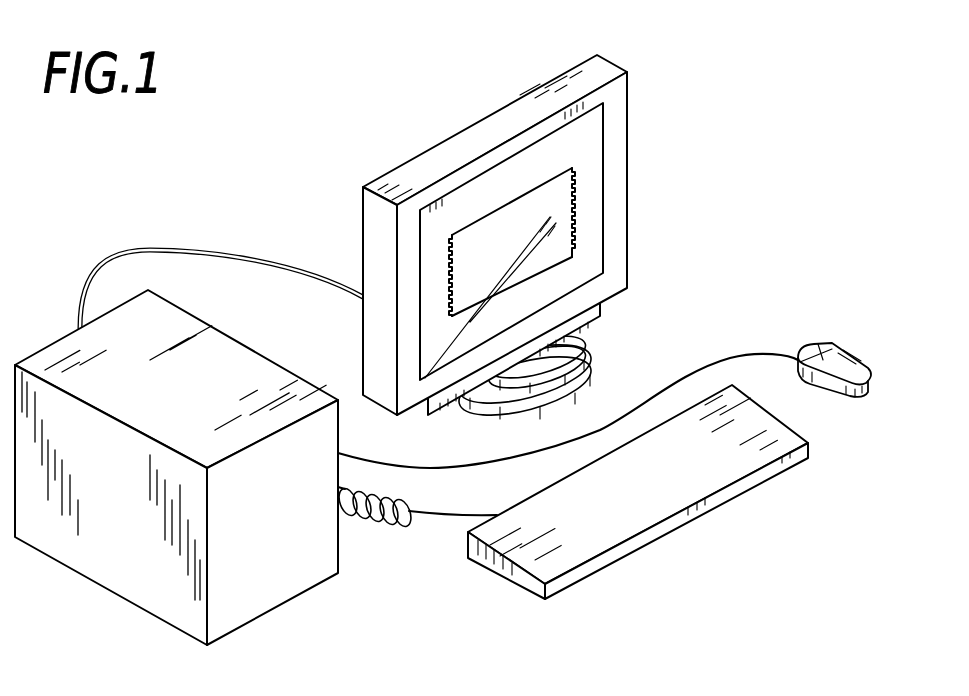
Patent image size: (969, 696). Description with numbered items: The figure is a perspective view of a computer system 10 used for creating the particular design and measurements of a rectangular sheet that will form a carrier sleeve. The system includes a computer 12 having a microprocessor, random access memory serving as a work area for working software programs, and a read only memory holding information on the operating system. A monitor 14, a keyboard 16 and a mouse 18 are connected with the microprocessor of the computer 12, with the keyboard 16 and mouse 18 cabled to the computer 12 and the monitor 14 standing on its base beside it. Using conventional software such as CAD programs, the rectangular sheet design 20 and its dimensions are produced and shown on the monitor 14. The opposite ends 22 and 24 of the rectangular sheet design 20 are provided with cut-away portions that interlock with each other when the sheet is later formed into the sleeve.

The computer system 10 is at (283, 98).
The computer 12 is at (88, 368).
The monitor 14 is at (535, 214).
The keyboard 16 is at (707, 513).
The mouse 18 is at (824, 355).
The rectangular sheet design 20 is at (543, 207).
The end of rectangular sheet design 22 is at (448, 253).
The end of rectangular sheet design 24 is at (588, 222).